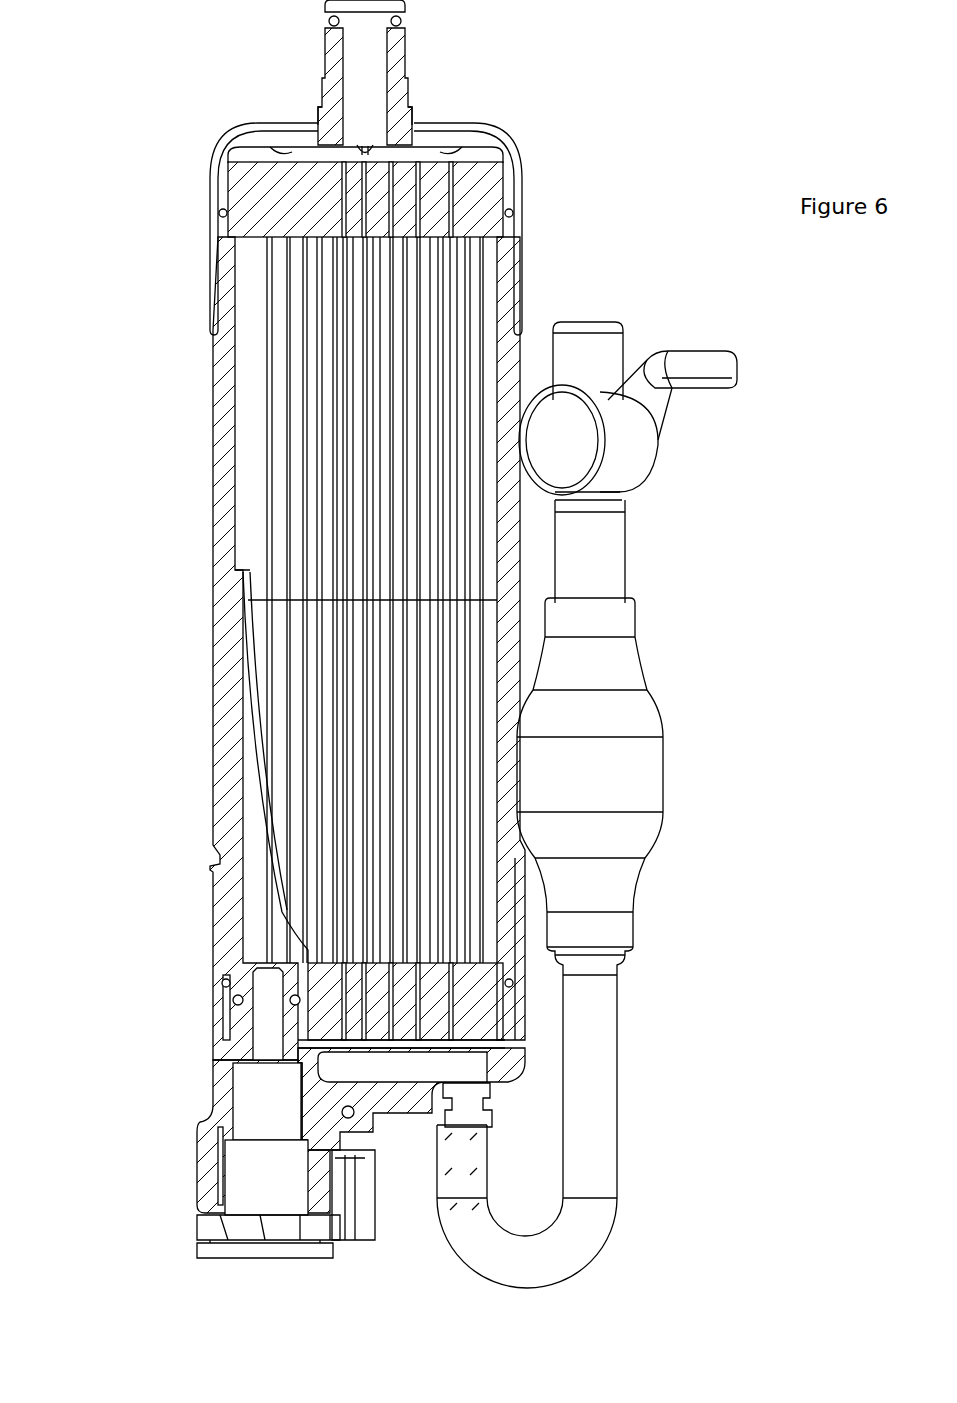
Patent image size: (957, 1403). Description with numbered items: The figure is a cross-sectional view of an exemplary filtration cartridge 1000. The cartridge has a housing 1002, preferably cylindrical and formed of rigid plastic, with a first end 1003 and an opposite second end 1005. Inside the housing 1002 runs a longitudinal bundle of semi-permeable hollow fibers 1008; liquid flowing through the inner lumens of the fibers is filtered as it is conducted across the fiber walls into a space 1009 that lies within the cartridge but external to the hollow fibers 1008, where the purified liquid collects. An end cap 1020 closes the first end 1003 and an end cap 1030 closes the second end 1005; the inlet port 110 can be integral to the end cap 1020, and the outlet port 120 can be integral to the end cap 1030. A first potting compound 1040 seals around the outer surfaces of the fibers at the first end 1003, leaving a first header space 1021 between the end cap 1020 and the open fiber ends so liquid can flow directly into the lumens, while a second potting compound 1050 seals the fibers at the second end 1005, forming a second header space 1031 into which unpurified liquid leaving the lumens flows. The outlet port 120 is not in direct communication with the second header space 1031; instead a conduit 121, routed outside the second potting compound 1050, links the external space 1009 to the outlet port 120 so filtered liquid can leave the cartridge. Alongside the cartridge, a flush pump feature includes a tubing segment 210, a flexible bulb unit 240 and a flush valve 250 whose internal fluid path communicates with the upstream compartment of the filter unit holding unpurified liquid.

The filtration cartridge 1000 is at (152, 339).
The end cap 1020 is at (243, 133).
The first header space 1021 is at (420, 157).
The inlet port 110 is at (398, 43).
The first end 1003 is at (317, 122).
The first potting compound 1040 is at (283, 200).
The semi-permeable hollow fibers 1008 is at (447, 330).
The housing 1002 is at (222, 487).
The space 1009 is at (253, 376).
The second potting compound 1050 is at (493, 1010).
The end cap 1030 is at (515, 1040).
The second header space 1031 is at (393, 1070).
The second end 1005 is at (480, 1110).
The outlet port 120 is at (205, 1137).
The conduit 121 is at (270, 1003).
The tubing segment 210 is at (585, 1241).
The flexible bulb unit 240 is at (620, 770).
The flush valve 250 is at (625, 462).